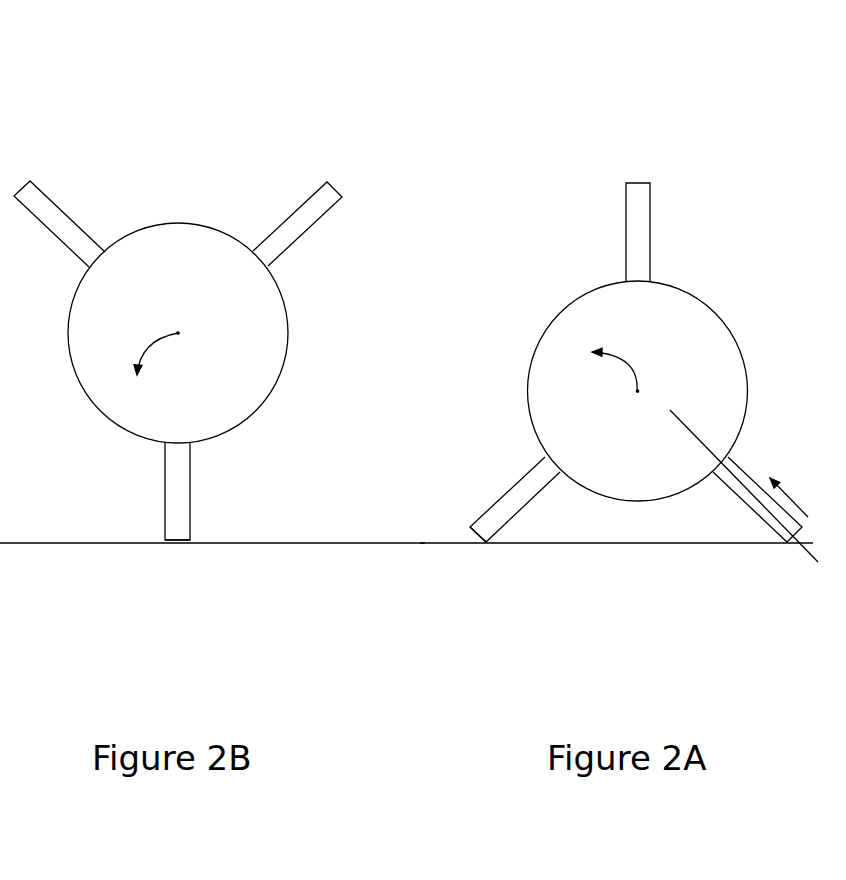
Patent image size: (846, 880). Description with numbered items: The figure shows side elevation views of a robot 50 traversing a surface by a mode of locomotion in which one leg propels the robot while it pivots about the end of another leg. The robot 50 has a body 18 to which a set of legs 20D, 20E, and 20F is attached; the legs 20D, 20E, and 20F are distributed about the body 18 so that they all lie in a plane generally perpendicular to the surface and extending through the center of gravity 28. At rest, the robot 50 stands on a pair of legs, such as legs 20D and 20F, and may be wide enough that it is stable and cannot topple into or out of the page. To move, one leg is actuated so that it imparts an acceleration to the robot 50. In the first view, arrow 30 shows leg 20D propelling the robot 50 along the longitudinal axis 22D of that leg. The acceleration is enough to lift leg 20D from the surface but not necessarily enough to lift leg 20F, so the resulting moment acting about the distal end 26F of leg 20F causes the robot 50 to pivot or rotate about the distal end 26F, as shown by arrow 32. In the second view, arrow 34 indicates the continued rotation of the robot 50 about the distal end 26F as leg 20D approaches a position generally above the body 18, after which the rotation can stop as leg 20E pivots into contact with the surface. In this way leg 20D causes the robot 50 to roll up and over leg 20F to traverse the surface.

In FIG. 2B, the robot 50 is at (263, 132).
In FIG. 2A, the robot 50 is at (602, 132).
In FIG. 2B, the body 18 is at (313, 338).
In FIG. 2A, the body 18 is at (773, 383).
In FIG. 2B, the leg 20D is at (330, 208).
In FIG. 2A, the leg 20D is at (758, 514).
In FIG. 2B, the leg 20E is at (53, 199).
In FIG. 2A, the leg 20E is at (650, 232).
In FIG. 2B, the leg 20F is at (188, 510).
In FIG. 2A, the leg 20F is at (507, 492).
In FIG. 2A, the longitudinal axis 22D is at (697, 438).
In FIG. 2B, the distal end 26F is at (175, 541).
In FIG. 2A, the distal end 26F is at (467, 541).
In FIG. 2B, the center of gravity 28 is at (178, 333).
In FIG. 2A, the center of gravity 28 is at (637, 392).
In FIG. 2A, the arrow 30 is at (783, 493).
In FIG. 2A, the arrow 32 is at (628, 364).
In FIG. 2B, the arrow 34 is at (144, 349).